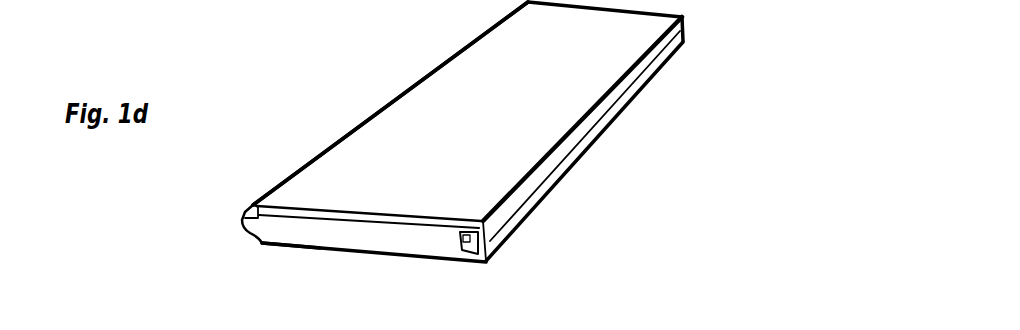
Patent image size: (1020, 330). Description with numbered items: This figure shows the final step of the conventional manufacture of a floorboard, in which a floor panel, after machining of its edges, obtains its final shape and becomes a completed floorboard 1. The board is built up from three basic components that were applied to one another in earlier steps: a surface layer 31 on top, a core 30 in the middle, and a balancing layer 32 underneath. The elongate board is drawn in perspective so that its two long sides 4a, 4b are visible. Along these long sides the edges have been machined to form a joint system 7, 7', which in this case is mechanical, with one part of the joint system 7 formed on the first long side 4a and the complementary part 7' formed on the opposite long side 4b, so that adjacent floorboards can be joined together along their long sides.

The floorboard 1 is at (416, 116).
The long side 4a is at (381, 102).
The long side 4b is at (603, 137).
The joint system 7 is at (216, 212).
The joint system 7' is at (526, 241).
The core 30 is at (371, 243).
The surface layer 31 is at (683, 18).
The balancing layer 32 is at (316, 246).